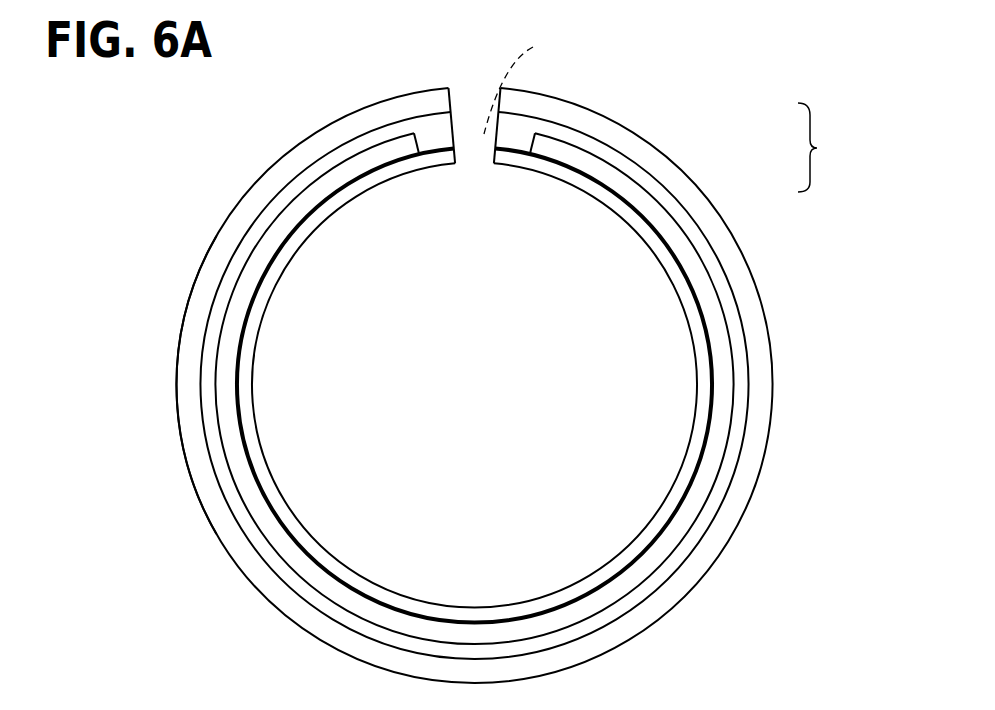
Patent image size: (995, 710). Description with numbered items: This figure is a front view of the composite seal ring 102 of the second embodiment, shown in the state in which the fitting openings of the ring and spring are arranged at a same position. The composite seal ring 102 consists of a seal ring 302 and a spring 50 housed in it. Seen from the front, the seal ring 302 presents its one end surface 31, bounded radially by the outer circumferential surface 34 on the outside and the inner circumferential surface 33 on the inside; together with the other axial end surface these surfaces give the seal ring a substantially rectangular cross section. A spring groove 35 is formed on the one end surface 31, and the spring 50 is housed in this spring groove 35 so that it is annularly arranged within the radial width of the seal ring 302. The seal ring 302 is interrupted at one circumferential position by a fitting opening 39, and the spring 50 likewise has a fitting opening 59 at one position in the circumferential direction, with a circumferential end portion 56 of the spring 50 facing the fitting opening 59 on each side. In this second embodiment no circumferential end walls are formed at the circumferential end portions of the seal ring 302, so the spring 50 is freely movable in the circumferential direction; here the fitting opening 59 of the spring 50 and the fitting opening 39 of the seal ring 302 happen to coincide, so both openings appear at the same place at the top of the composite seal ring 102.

The composite seal ring 102 is at (829, 147).
The seal ring 302 is at (708, 170).
The one end surface 31 is at (237, 548).
The inner circumferential surface 33 is at (252, 390).
The outer circumferential surface 34 is at (177, 388).
The spring groove 35 is at (738, 413).
The fitting opening 39 is at (472, 112).
The spring 50 is at (690, 262).
The circumferential end portion 56 is at (400, 145).
The fitting opening 59 is at (521, 81).